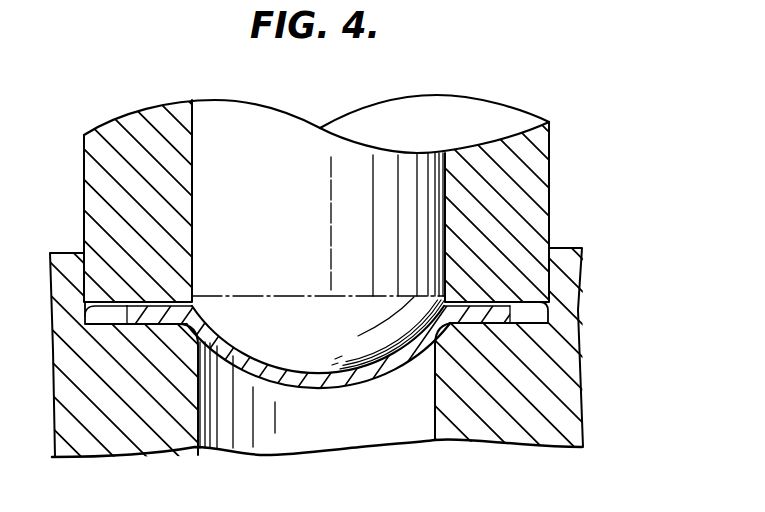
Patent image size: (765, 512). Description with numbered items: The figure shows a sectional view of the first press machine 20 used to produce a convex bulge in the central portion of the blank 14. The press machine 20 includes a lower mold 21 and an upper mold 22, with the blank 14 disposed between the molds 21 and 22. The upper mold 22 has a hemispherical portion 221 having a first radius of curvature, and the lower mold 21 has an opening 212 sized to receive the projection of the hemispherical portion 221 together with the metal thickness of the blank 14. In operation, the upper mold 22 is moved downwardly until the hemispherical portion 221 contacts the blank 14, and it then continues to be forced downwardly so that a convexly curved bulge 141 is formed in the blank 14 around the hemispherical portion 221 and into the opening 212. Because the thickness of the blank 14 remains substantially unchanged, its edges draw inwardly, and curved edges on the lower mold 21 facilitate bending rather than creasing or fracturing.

The first press machine 20 is at (562, 236).
The lower mold 21 is at (63, 262).
The upper mold 22 is at (95, 178).
The blank 14 is at (512, 308).
The convex bulge 141 is at (304, 387).
The hemispherical portion 221 is at (373, 338).
The opening 212 is at (434, 425).